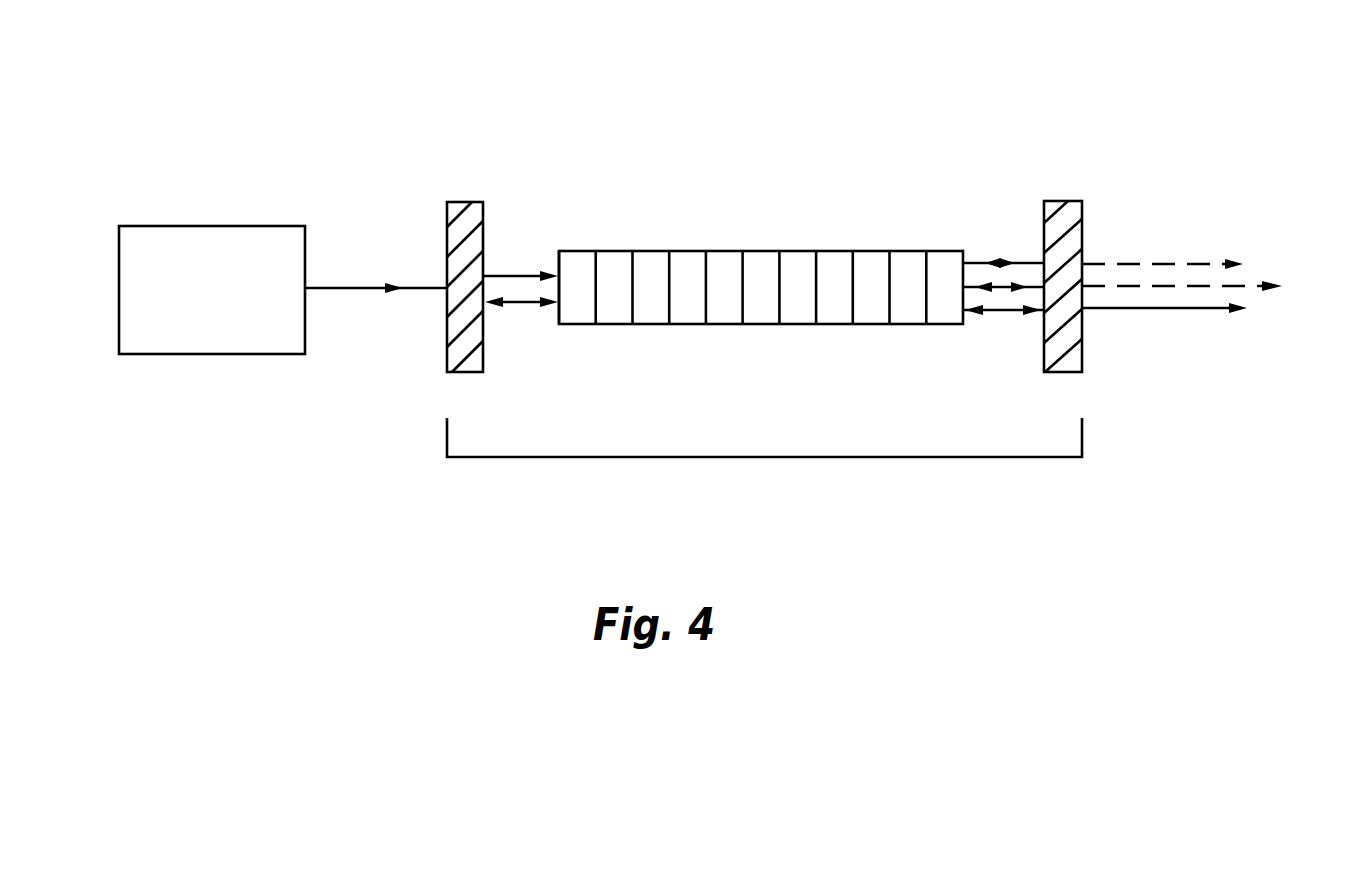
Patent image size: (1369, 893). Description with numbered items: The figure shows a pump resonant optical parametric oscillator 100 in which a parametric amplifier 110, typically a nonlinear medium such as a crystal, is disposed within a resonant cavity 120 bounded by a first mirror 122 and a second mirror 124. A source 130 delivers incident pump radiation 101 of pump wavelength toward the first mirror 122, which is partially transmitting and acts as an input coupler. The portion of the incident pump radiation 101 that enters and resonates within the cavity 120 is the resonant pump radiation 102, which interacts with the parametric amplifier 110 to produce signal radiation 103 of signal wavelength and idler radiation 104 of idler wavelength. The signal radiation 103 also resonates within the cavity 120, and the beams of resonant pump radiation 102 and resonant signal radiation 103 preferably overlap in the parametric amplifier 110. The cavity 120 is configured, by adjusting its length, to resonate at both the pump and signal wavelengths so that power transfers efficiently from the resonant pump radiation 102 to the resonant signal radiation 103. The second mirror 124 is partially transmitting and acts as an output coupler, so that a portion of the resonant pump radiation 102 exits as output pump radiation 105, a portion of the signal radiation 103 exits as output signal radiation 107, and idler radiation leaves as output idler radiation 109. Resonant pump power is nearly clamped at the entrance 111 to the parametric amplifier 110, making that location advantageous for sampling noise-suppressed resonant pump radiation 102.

The pump resonant optical parametric oscillator 100 is at (380, 80).
The incident pump radiation 101 is at (352, 287).
The resonant pump radiation 102 is at (522, 308).
The resonant signal radiation 103 is at (508, 275).
The idler radiation 104 is at (980, 262).
The output pump radiation 105 is at (1180, 312).
The output signal radiation 107 is at (1168, 263).
The output idler radiation 109 is at (1240, 285).
The parametric amplifier 110 is at (763, 249).
The entrance 111 is at (555, 312).
The resonant cavity 120 is at (660, 457).
The first mirror 122 is at (455, 202).
The second mirror 124 is at (1053, 200).
The source 130 is at (215, 226).